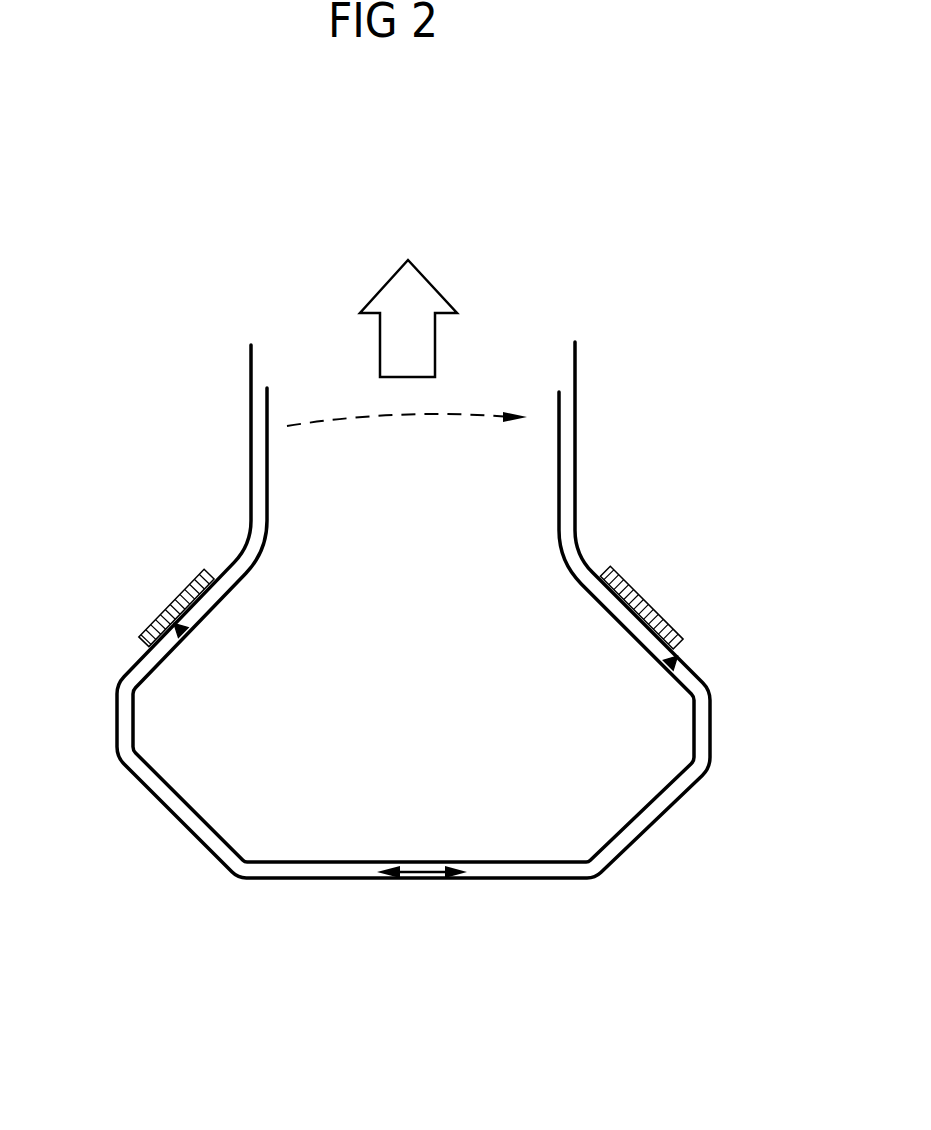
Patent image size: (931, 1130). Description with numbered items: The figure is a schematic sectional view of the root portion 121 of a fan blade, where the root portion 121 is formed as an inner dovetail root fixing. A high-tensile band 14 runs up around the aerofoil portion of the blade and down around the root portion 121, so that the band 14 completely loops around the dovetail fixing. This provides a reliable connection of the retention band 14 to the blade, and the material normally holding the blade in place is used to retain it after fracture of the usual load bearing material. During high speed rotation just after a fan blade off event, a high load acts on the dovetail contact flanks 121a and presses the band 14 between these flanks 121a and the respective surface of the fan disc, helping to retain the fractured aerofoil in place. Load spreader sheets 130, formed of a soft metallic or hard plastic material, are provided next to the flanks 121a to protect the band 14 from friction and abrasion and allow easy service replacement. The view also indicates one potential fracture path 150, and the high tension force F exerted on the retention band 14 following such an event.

The high-tensile band 14 is at (120, 685).
The root portion 121 is at (260, 560).
The dovetail contact flanks 121a is at (158, 618).
The load spreader sheets 130 is at (182, 592).
The fracture path 150 is at (462, 418).
The high tension force F is at (417, 880).